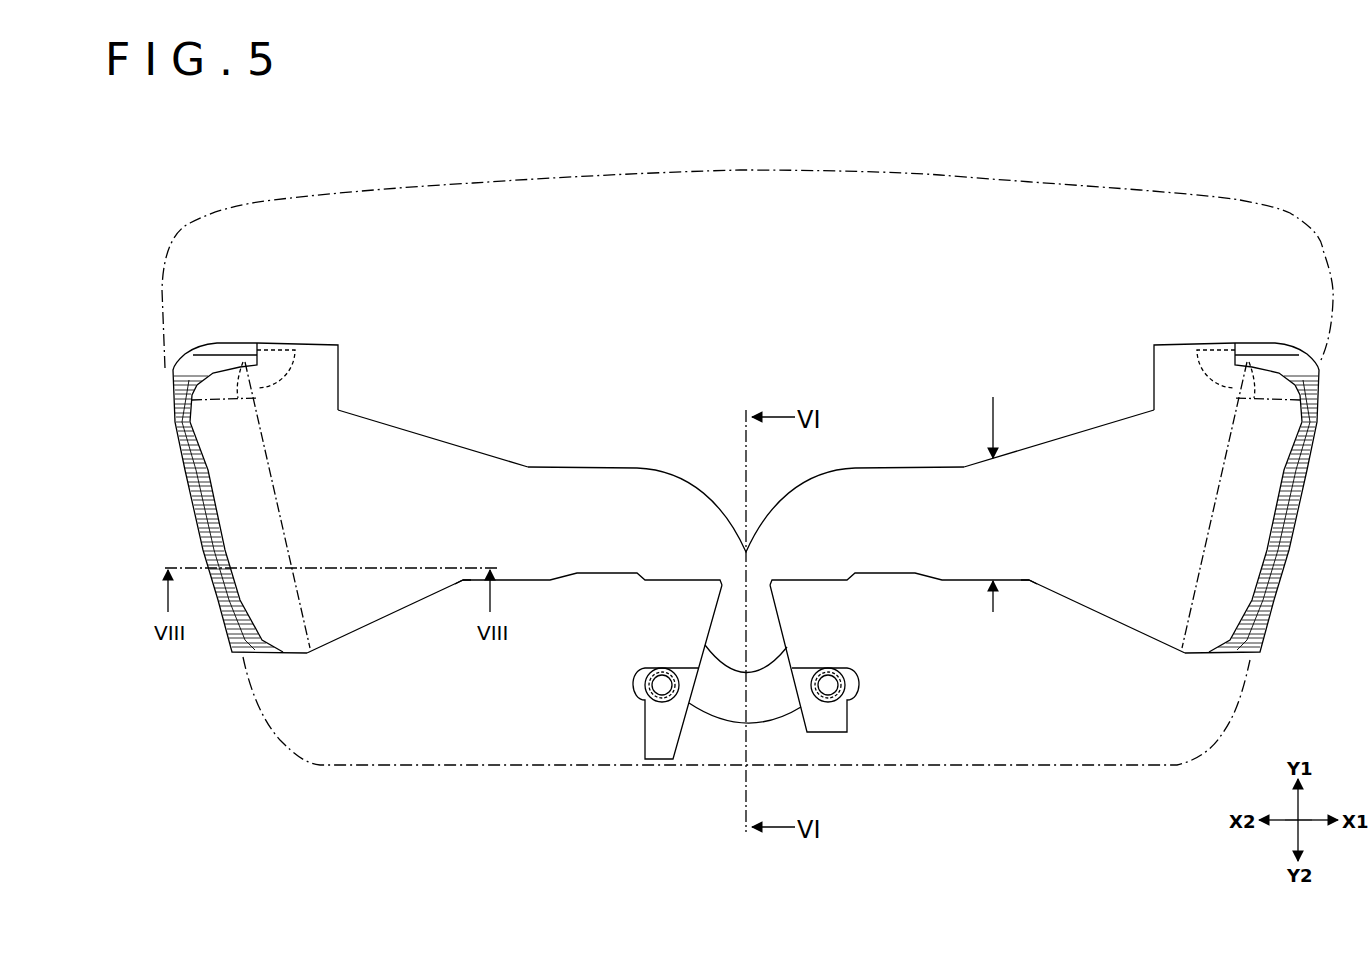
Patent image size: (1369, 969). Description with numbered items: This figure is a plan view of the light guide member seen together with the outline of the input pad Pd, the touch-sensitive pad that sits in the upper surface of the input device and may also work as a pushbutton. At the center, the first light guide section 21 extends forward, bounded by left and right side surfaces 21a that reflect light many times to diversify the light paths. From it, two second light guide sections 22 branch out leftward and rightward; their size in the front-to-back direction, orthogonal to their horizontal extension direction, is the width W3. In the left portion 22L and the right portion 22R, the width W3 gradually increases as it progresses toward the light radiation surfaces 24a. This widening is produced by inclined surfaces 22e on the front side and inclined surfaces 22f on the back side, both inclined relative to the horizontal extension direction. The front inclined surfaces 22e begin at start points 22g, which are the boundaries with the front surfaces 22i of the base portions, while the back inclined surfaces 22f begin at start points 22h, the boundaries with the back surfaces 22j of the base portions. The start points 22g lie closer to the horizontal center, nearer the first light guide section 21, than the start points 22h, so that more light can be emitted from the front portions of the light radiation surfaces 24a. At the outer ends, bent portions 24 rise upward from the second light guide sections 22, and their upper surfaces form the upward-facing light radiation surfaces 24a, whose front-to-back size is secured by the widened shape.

The input pad Pd is at (950, 172).
The first light guide section 21 is at (746, 672).
The side surfaces 21a is at (710, 618).
The second light guide sections 22 is at (746, 502).
The left portion 22L is at (373, 437).
The right portion 22R is at (1087, 588).
The inclined surfaces on the front side 22e is at (409, 433).
The inclined surfaces on the back side 22f is at (353, 636).
The start points 22g is at (528, 466).
The start points 22h is at (462, 582).
The front surfaces 22i is at (636, 468).
The back surfaces 22j is at (550, 582).
The bent portions 24 is at (751, 530).
The light radiation surfaces 24a is at (232, 653).
The width W3 is at (1016, 504).